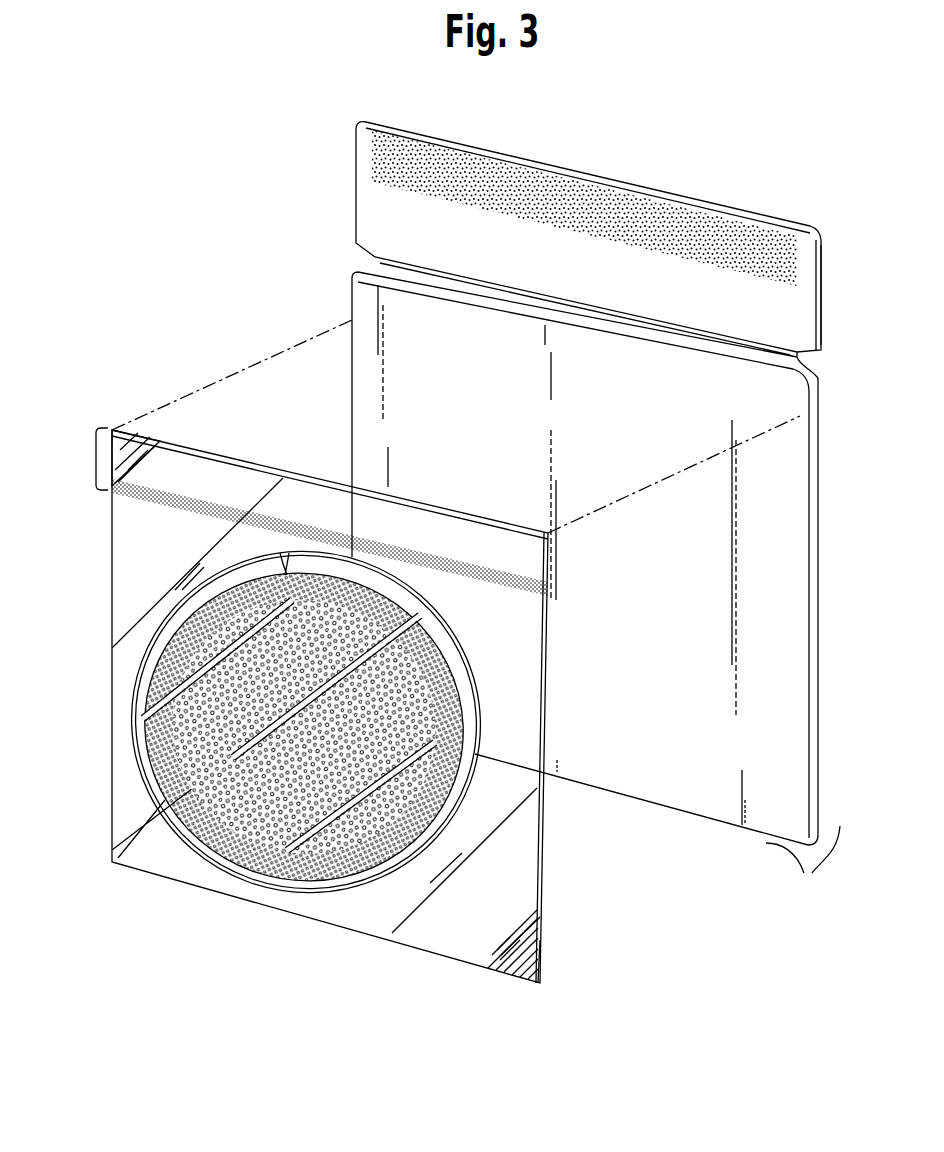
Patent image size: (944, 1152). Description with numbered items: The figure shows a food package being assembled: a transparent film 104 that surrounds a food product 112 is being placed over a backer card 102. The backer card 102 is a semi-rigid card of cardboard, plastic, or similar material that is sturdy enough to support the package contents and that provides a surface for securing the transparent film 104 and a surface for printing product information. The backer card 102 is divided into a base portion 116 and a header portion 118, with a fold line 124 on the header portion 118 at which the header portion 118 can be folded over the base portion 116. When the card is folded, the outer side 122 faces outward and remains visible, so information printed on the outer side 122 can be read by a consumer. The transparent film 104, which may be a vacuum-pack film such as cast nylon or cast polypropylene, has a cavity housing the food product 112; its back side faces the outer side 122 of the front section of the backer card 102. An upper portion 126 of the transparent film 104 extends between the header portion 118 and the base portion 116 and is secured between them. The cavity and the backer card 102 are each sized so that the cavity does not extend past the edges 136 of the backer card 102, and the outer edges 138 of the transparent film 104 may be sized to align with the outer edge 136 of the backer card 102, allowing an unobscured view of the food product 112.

The backer card 102 is at (653, 184).
The transparent film 104 is at (521, 850).
The food product 112 is at (250, 884).
The base portion 116 is at (822, 535).
The header portion 118 is at (822, 277).
The outer side 122 is at (618, 637).
The fold line 124 is at (767, 351).
The upper portion of the transparent film 126 is at (100, 462).
The edges of the backer card 136 is at (803, 864).
The outer edges of the transparent film 138 is at (542, 943).